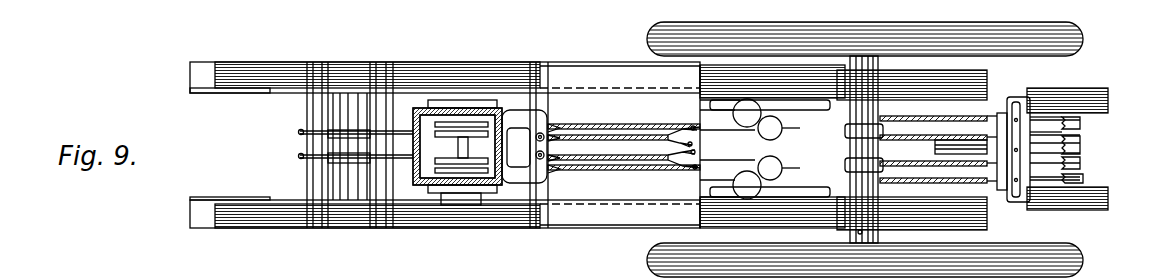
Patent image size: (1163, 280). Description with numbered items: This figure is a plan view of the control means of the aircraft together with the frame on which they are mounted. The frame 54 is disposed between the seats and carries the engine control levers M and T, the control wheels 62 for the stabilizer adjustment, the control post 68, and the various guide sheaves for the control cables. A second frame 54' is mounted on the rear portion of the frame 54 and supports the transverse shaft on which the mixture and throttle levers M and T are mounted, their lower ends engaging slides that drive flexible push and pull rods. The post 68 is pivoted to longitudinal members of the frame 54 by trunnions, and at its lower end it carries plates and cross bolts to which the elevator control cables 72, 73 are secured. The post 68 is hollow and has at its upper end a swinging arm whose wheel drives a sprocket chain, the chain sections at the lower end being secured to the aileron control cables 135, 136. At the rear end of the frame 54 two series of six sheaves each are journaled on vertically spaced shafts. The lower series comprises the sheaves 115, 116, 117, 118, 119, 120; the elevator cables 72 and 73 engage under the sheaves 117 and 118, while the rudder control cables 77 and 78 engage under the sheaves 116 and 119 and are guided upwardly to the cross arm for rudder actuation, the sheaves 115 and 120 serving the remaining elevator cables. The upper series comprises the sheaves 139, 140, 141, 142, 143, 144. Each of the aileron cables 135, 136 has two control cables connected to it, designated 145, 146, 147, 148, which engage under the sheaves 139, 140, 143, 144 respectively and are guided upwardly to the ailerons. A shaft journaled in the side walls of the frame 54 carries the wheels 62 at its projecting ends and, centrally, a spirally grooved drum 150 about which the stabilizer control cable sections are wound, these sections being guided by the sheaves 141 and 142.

The frame 54 is at (517, 131).
The frame 54' is at (843, 150).
The control wheels 62 is at (1078, 256).
The control post 68 is at (455, 185).
The cable 72 is at (645, 135).
The cable 73 is at (636, 160).
The cable 77 is at (398, 132).
The cable 78 is at (400, 160).
The sheave 115 is at (1082, 118).
The sheave 116 is at (1082, 134).
The sheave 117 is at (1082, 143).
The sheave 118 is at (1082, 153).
The sheave 119 is at (1082, 163).
The sheave 120 is at (1082, 178).
The aileron control cable 135 is at (592, 114).
The aileron control cable 136 is at (580, 170).
The sheave 139 is at (1030, 118).
The sheave 140 is at (1040, 133).
The sheave 141 is at (1050, 142).
The sheave 142 is at (1070, 180).
The sheave 143 is at (1010, 160).
The sheave 144 is at (1025, 185).
The control cable 145 is at (900, 116).
The control cable 146 is at (935, 135).
The control cable 147 is at (962, 166).
The control cable 148 is at (920, 183).
The drum 150 is at (862, 185).